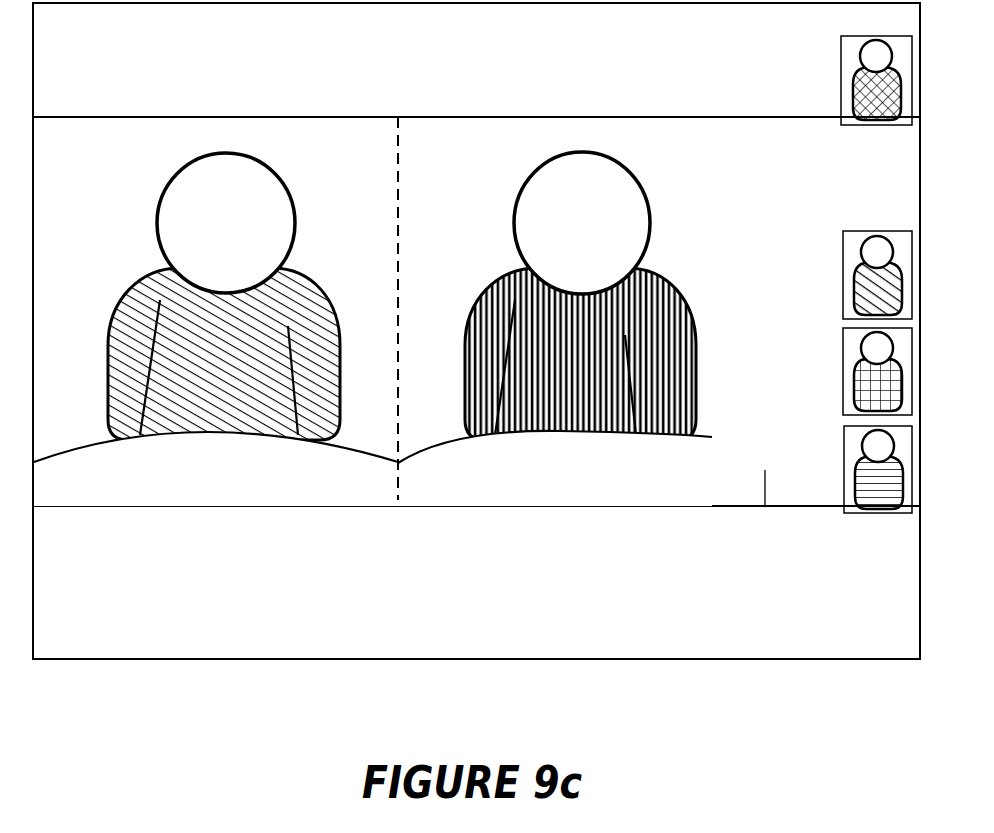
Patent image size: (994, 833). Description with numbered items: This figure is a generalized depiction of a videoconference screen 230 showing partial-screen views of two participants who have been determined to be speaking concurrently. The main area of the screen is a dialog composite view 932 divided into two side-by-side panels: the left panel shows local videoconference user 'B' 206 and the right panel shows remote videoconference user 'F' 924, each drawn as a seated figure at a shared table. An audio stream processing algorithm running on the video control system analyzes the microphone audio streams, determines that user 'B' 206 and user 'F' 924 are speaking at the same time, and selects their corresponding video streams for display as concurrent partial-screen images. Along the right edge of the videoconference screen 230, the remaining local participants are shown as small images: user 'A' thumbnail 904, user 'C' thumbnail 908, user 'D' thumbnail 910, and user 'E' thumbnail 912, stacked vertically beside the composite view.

The videoconference screen 230 is at (80, 32).
The dialog composite view 932 is at (476, 278).
The local videoconference user 'B' 206 is at (157, 235).
The remote videoconference user 'F' 924 is at (564, 296).
The local videoconference user thumbnail 'A' 904 is at (841, 56).
The local videoconference user thumbnail 'C' 908 is at (843, 250).
The local videoconference user thumbnail 'D' 910 is at (843, 345).
The local videoconference user thumbnail 'E' 912 is at (845, 445).